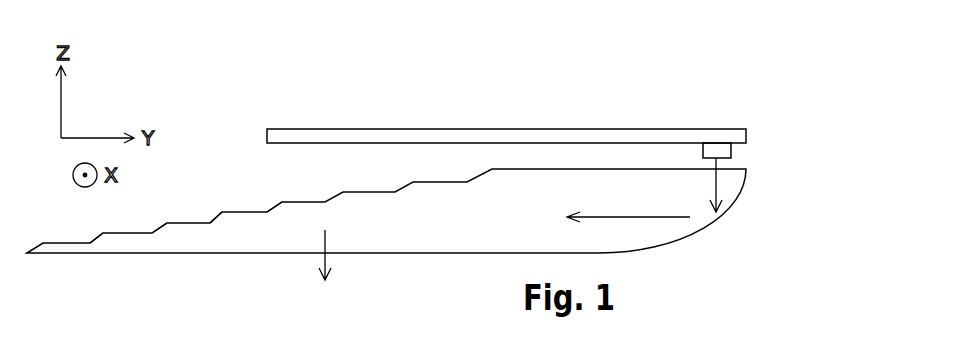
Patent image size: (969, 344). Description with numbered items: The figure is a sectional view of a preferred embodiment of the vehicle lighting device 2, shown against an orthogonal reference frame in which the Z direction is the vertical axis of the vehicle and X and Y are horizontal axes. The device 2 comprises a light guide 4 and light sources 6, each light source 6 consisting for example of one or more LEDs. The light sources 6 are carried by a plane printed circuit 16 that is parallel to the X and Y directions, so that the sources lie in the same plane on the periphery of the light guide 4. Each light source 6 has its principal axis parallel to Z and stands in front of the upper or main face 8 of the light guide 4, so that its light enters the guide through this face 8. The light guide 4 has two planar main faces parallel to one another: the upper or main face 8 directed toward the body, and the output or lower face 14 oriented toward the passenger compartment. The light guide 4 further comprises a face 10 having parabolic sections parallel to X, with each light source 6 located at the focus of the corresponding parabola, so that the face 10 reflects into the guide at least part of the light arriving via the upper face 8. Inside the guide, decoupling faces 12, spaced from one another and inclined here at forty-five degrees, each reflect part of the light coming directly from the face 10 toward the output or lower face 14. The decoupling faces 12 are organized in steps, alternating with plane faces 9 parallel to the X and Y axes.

The lighting device 2 is at (710, 53).
The light guide 4 is at (703, 229).
The light source 6 is at (740, 153).
The upper or main face 8 is at (523, 158).
The plane face 9 is at (313, 193).
The face with parabolic sections 10 is at (735, 223).
The decoupling faces 12 is at (88, 233).
The output or lower face 14 is at (442, 264).
The plane printed circuit 16 is at (624, 117).